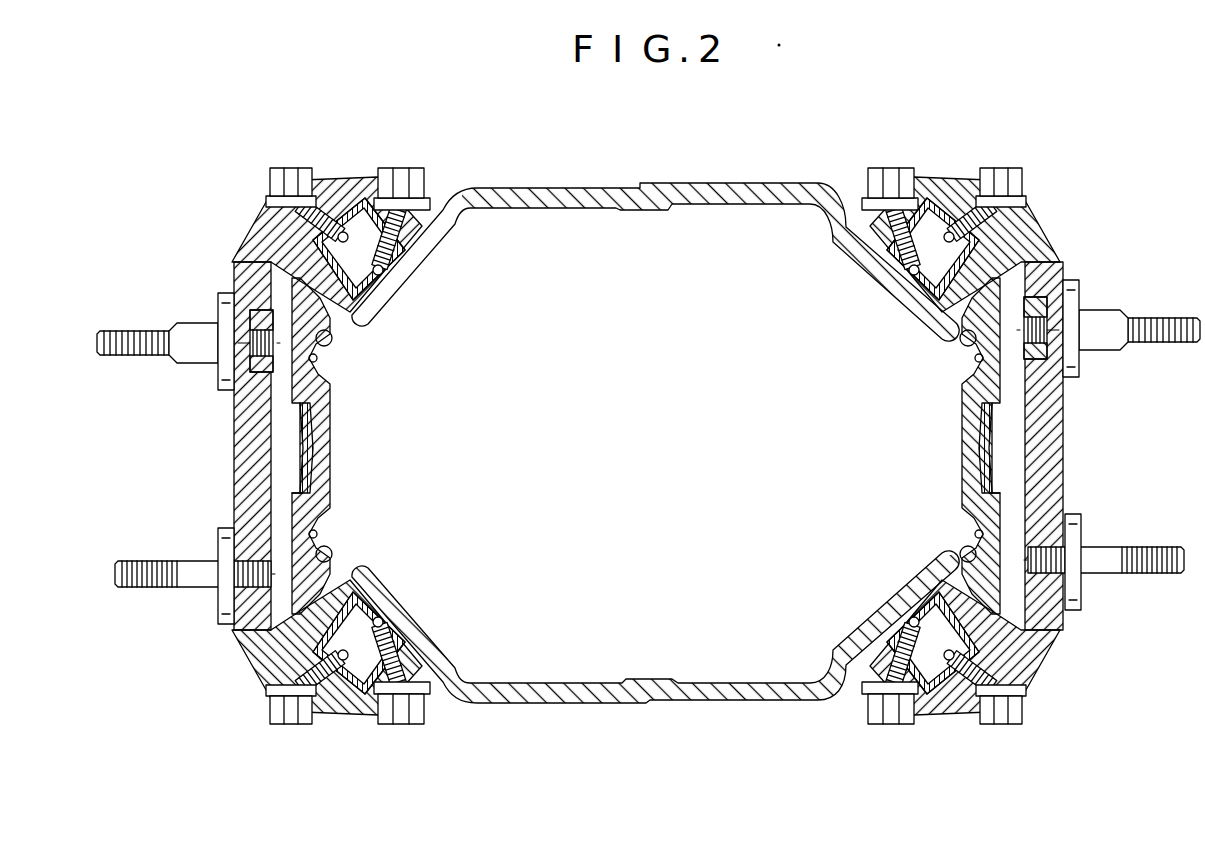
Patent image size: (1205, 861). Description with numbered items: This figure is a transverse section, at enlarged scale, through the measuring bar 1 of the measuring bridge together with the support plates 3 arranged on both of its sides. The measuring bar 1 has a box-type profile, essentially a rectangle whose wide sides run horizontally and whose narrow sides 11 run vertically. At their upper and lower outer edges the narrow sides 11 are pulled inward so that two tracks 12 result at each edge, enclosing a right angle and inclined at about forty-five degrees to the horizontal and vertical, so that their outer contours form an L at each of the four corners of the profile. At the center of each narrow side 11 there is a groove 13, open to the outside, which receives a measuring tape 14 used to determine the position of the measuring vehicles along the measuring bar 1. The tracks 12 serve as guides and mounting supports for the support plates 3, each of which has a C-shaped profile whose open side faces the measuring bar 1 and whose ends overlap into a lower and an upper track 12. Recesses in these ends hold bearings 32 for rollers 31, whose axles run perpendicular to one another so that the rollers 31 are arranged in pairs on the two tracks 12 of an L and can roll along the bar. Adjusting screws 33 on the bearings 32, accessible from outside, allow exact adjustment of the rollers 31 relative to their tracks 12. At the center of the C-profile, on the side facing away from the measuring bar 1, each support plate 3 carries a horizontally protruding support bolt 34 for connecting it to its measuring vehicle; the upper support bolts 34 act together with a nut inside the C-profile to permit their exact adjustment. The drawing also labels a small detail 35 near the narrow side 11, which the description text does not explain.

The measuring bar 1 is at (581, 190).
The support plate 3 is at (255, 237).
The narrow side 11 is at (335, 420).
The track 12 is at (362, 305).
The groove 13 is at (303, 490).
The measuring tape 14 is at (300, 425).
The roller 31 is at (343, 232).
The bearing 32 is at (360, 215).
The adjusting screw 33 is at (290, 166).
The support bolt 34 is at (126, 331).
The projection 35 is at (330, 380).